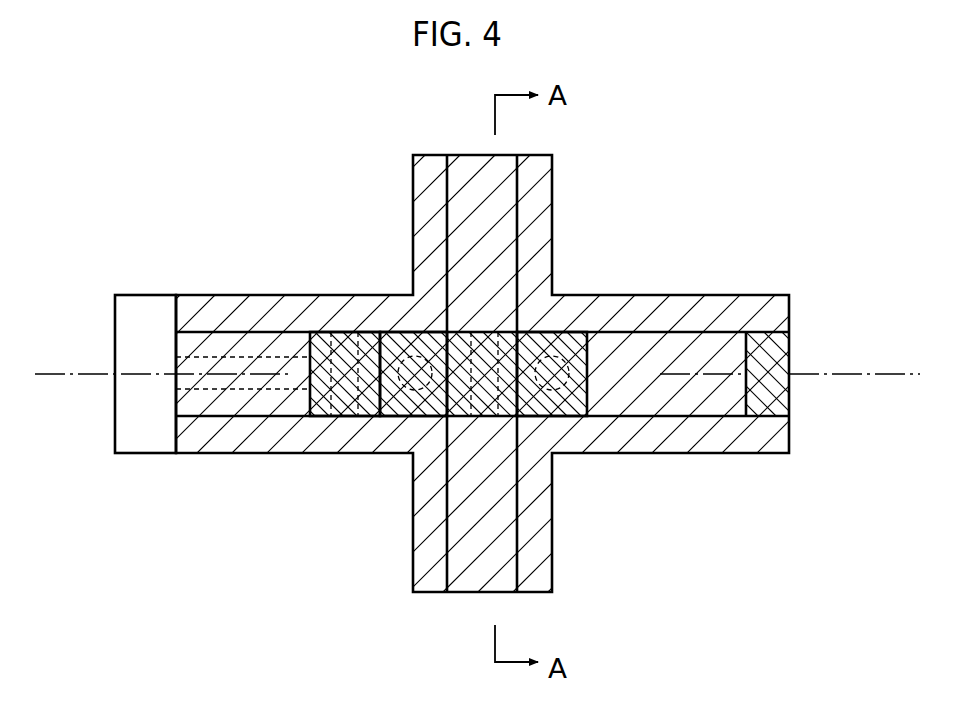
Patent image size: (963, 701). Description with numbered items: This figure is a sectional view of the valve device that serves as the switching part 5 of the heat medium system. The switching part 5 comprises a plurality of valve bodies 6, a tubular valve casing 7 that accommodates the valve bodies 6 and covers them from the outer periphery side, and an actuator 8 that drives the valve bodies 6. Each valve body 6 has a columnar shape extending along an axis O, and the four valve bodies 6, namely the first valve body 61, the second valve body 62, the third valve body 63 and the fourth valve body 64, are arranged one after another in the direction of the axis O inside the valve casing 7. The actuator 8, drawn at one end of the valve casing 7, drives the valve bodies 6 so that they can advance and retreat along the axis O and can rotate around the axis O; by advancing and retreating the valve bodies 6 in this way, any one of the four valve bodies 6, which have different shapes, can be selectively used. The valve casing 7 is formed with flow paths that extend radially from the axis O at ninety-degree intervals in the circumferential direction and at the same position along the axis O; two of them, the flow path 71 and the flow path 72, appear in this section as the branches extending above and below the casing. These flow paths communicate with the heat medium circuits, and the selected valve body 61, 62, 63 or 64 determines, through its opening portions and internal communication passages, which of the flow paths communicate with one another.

The switching part 5 is at (93, 147).
The valve body 6 is at (432, 450).
The first valve body 61 is at (317, 410).
The second valve body 62 is at (390, 420).
The third valve body 63 is at (487, 403).
The fourth valve body 64 is at (571, 400).
The valve casing 7 is at (274, 300).
The flow path 71 is at (452, 188).
The flow path 72 is at (448, 563).
The actuator 8 is at (137, 443).
The axis O is at (43, 373).